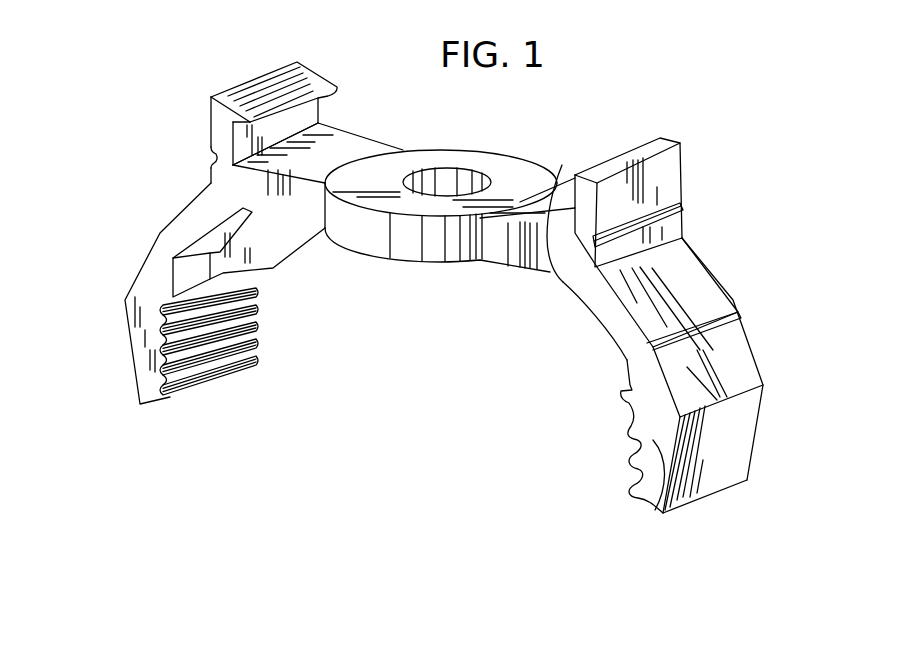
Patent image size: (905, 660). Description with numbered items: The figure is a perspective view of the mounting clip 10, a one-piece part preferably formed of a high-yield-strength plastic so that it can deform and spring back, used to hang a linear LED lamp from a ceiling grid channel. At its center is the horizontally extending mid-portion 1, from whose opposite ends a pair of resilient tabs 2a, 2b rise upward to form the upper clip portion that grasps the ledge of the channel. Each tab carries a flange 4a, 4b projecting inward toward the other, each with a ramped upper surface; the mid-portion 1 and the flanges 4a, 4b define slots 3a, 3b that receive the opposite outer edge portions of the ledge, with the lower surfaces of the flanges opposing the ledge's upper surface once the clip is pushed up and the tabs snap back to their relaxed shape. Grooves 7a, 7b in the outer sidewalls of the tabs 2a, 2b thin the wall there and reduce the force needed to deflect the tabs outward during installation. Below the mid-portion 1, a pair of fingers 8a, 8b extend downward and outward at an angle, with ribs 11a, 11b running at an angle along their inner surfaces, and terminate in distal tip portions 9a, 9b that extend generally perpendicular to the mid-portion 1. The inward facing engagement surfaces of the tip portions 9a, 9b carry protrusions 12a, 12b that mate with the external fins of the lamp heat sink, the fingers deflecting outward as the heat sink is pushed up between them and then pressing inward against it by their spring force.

The mounting clip 10 is at (172, 95).
The mid-portion 1 is at (398, 255).
The resilient tab 2a is at (211, 116).
The resilient tab 2b is at (682, 155).
The slot 3a is at (303, 117).
The slot 3b is at (553, 277).
The flange 4a is at (323, 68).
The flange 4b is at (567, 180).
The groove 7a is at (215, 157).
The groove 7b is at (680, 203).
The finger 8a is at (160, 234).
The finger 8b is at (733, 300).
The distal tip portion 9a is at (150, 318).
The distal tip portion 9b is at (652, 505).
The rib 11a is at (272, 263).
The rib 11b is at (573, 313).
The protrusions 12a is at (258, 357).
The protrusions 12b is at (627, 450).